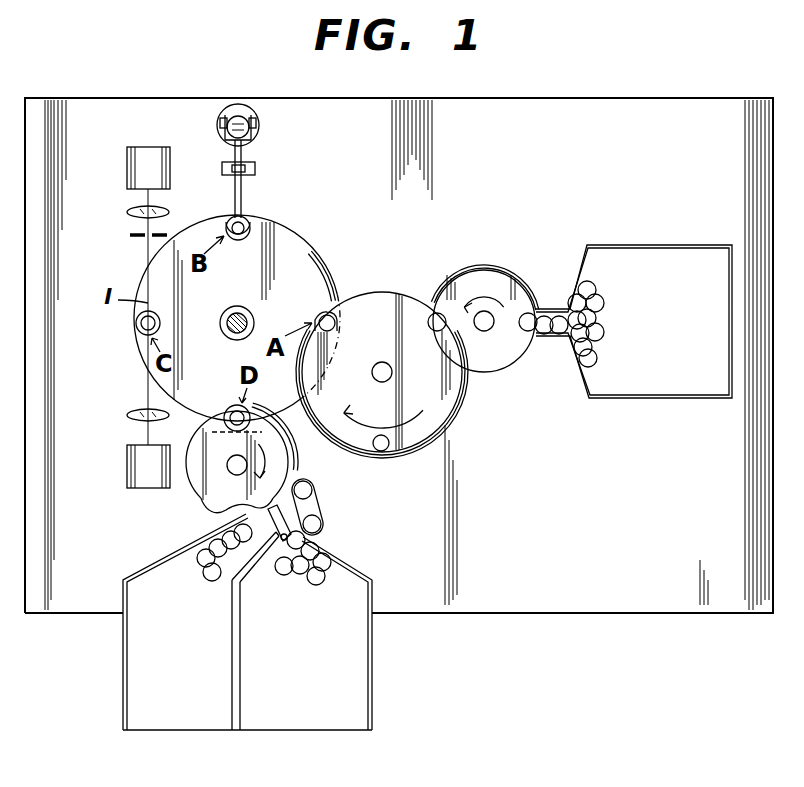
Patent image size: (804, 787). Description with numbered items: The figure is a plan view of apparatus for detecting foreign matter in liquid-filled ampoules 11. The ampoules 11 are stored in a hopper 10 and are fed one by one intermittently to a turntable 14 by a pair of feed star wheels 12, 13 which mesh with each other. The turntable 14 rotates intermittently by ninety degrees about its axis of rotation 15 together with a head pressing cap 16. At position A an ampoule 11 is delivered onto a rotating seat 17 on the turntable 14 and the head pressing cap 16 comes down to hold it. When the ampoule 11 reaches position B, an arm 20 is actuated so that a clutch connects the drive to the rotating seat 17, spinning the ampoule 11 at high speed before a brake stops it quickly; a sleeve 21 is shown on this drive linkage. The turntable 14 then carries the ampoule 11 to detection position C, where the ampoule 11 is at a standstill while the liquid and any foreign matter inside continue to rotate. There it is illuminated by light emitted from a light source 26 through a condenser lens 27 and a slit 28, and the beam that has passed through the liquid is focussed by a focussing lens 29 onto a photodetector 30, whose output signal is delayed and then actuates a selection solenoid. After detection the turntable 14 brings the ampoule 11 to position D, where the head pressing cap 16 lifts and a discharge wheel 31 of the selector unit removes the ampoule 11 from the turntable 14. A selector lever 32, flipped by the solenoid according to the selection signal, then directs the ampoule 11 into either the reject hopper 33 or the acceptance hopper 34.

The hopper 10 is at (648, 258).
The ampoules 11 is at (135, 325).
The feed star wheel 12 is at (502, 370).
The feed star wheel 13 is at (418, 436).
The turntable 14 is at (300, 242).
The axis of rotation 15 is at (226, 316).
The head pressing cap 16 is at (242, 240).
The rotating seat 17 is at (228, 220).
The arm 20 is at (248, 152).
The sleeve 21 is at (256, 170).
The light source 26 is at (140, 170).
The condenser lens 27 is at (130, 212).
The slit 28 is at (130, 235).
The focussing lens 29 is at (130, 416).
The photodetector 30 is at (130, 467).
The discharge wheel 31 is at (206, 497).
The selector lever 32 is at (308, 500).
The reject hopper 33 is at (352, 690).
The acceptance hopper 34 is at (146, 690).